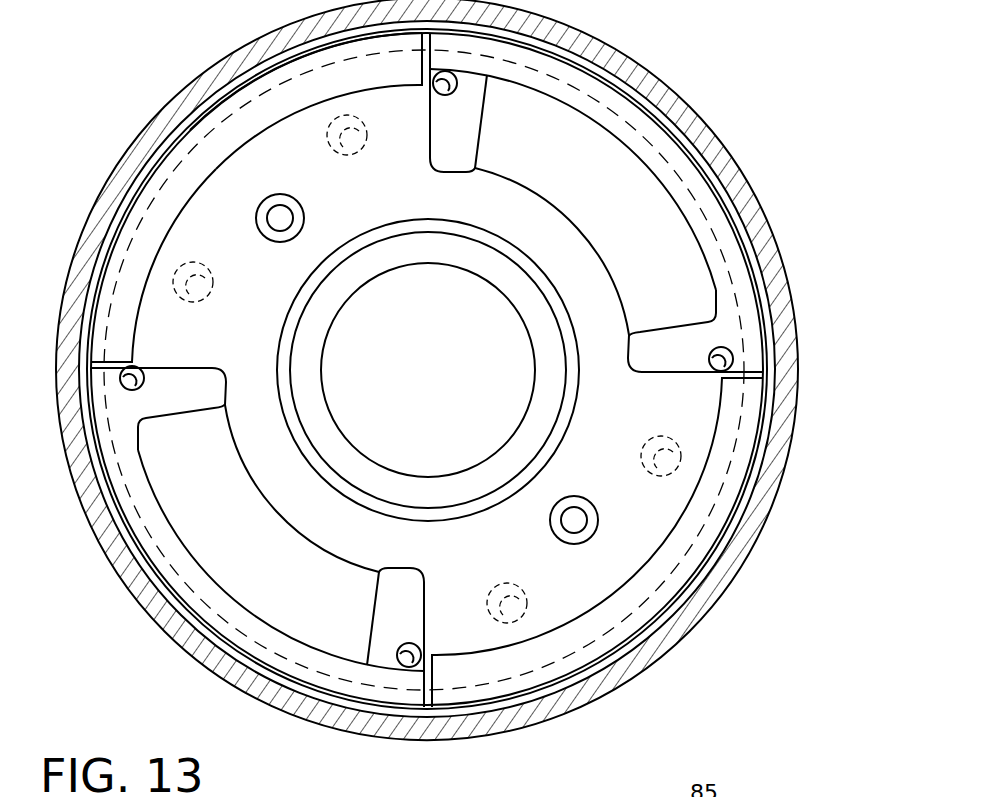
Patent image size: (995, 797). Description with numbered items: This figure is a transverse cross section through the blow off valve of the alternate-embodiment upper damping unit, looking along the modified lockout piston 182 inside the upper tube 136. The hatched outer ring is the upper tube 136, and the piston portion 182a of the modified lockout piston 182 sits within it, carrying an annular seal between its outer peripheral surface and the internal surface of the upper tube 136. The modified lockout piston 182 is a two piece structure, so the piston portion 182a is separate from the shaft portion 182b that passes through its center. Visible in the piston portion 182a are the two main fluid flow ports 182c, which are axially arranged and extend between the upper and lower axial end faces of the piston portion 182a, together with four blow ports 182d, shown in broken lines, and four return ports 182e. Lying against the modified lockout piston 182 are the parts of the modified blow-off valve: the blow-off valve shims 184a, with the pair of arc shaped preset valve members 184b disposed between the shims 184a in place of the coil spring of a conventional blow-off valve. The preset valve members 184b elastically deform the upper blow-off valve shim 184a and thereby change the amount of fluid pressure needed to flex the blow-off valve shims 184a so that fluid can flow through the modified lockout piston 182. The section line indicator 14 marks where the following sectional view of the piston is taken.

The upper tube 136 is at (742, 169).
The modified lockout piston 182 is at (357, 701).
The piston portion 182a is at (695, 330).
The shaft portion 182b is at (650, 585).
The main fluid flow ports 182c is at (488, 78).
The blow ports 182d is at (335, 125).
The return ports 182e is at (488, 78).
The blow-off valve shims 184a is at (197, 337).
The preset valve members 184b is at (190, 163).
The section line FIG. 14 is at (513, 405).